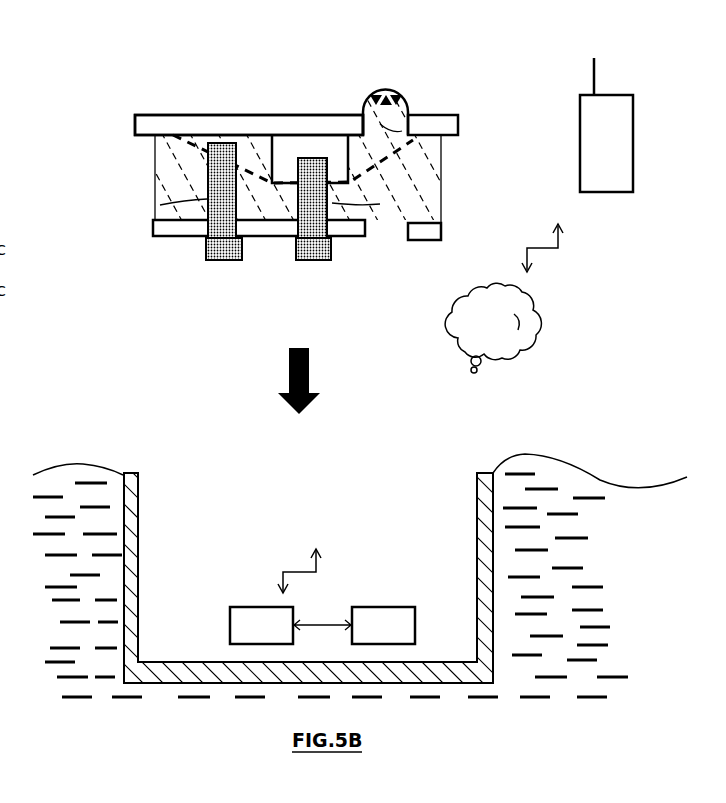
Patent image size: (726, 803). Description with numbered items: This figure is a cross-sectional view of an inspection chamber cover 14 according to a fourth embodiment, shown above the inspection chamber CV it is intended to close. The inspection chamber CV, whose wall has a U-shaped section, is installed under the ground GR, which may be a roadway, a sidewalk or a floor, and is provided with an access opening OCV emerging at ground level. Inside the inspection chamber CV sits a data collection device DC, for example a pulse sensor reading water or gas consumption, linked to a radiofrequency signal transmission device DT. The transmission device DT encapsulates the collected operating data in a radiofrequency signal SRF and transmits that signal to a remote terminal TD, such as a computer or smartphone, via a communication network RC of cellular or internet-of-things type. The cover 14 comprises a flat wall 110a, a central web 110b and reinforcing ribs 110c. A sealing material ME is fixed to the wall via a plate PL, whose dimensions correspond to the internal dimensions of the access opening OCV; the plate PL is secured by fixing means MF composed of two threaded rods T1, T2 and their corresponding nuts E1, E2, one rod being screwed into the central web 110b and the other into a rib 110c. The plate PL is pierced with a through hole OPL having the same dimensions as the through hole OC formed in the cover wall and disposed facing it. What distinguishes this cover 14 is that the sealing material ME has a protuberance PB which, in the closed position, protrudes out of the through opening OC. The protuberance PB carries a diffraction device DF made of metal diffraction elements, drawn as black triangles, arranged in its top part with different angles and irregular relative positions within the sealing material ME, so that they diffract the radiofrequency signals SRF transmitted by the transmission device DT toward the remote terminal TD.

The cover 14 is at (168, 97).
The flat wall 110a is at (230, 118).
The central web 110b is at (303, 132).
The reinforcing ribs 110c is at (190, 147).
The protuberance PB is at (386, 95).
The diffraction device DF is at (406, 102).
The through hole OC is at (385, 128).
The threaded rod T1 is at (207, 199).
The threaded rod T2 is at (332, 203).
The sealing material ME is at (182, 210).
The plate PL is at (178, 238).
The through hole OPL is at (380, 238).
The nut E1 is at (216, 258).
The nut E2 is at (318, 268).
The fixing means MF is at (236, 266).
The remote terminal TD is at (579, 116).
The radiofrequency signal SRF is at (419, 405).
The communication network RC is at (493, 328).
The opening OCV is at (215, 485).
The ground GR is at (67, 462).
The inspection chamber CV is at (479, 470).
The radiofrequency signal transmission device DT is at (291, 625).
The data collection device DC is at (383, 625).